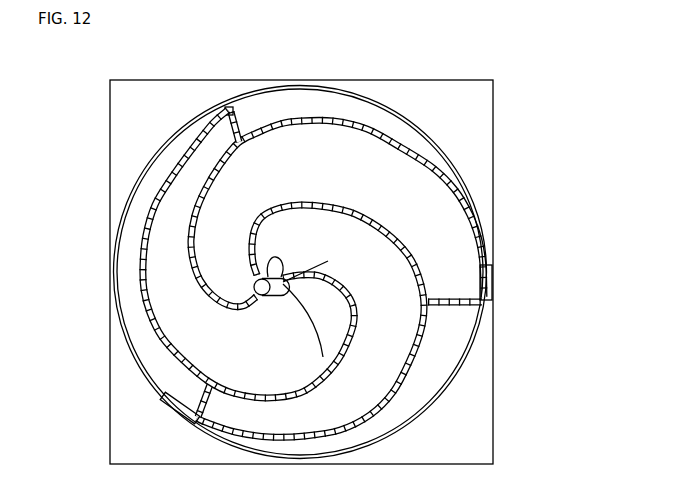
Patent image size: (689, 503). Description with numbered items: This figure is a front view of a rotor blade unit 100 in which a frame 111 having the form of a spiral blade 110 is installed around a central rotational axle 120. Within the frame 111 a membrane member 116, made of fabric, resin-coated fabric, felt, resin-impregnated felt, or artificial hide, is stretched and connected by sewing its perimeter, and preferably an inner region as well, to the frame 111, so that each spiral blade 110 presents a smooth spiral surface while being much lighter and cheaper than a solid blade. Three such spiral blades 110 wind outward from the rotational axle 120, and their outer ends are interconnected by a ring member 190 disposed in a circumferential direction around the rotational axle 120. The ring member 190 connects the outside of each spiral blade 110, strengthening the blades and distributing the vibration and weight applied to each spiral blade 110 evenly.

The spiral heat exchanger assembly 100 is at (305, 252).
The spiral blade 110 is at (458, 275).
The frame 111 is at (213, 172).
The membrane member 116 is at (300, 147).
The rotational axle 120 is at (260, 287).
The ring member 190 is at (463, 363).